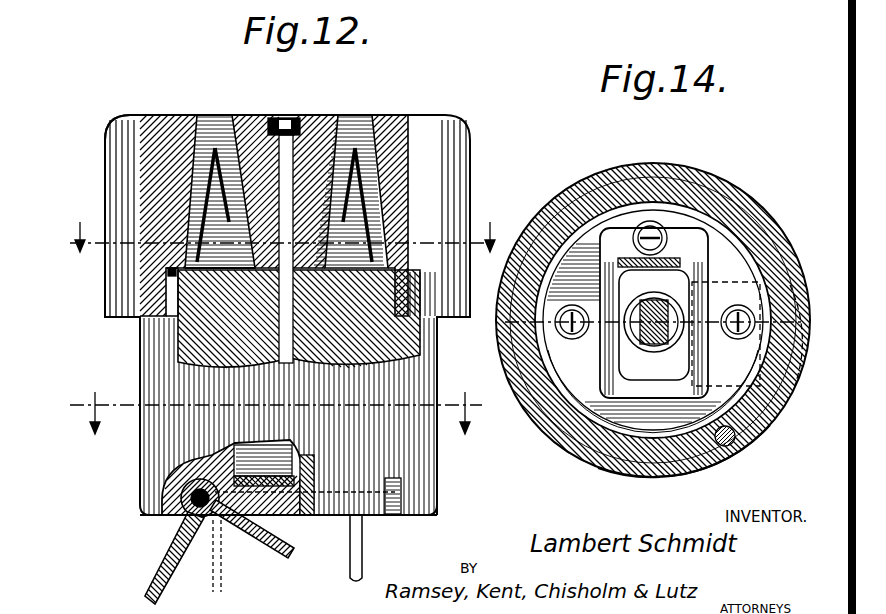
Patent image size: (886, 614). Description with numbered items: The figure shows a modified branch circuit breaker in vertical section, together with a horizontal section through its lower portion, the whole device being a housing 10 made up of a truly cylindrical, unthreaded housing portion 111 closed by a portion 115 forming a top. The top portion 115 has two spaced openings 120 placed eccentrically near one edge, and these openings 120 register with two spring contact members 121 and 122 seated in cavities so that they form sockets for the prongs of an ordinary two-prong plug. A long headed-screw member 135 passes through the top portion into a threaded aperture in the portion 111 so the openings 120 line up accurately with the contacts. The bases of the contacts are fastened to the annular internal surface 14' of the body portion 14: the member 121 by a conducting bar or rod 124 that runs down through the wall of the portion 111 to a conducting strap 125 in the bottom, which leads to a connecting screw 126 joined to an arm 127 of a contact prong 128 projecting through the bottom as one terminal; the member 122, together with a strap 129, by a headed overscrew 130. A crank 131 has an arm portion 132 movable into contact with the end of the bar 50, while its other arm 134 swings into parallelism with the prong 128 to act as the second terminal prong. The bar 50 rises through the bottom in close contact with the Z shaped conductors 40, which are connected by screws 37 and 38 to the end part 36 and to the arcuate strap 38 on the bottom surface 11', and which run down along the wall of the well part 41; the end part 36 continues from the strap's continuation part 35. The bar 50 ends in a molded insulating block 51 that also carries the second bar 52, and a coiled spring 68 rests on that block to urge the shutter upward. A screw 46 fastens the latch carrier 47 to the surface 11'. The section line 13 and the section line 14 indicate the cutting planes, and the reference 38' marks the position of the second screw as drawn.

In FIG. 12, the housing 10 is at (106, 162).
In FIG. 12, the portion forming a top for the housing 115 is at (468, 205).
In FIG. 12, the spaced openings 120 is at (222, 115).
In FIG. 12, the spring contact member 122 is at (213, 205).
In FIG. 12, the long headed-screw member 135 is at (220, 246).
In FIG. 12, the spring contact member 121 is at (356, 205).
In FIG. 12, the top surface of the flange 14' is at (282, 215).
In FIG. 12, the section line 13- 13 is at (285, 250).
In FIG. 12, the body portion 14 is at (276, 423).
In FIG. 12, the strap 129 is at (170, 318).
In FIG. 12, the headed overscrew 130 is at (176, 334).
In FIG. 12, the conducting bar or rod 124 is at (395, 350).
In FIG. 14, the conducting bar or rod 124 is at (732, 452).
In FIG. 12, the housing portion 111 is at (437, 418).
In FIG. 14, the housing portion 111 is at (647, 196).
In FIG. 12, the Z shaped conductors 40 is at (292, 445).
In FIG. 12, the crank 131 is at (212, 532).
In FIG. 12, the arm of the crank 134 is at (178, 556).
In FIG. 12, the arm portion of the crank 132 is at (275, 560).
In FIG. 12, the bar 50 is at (302, 522).
In FIG. 12, the contact prong 128 is at (353, 562).
In FIG. 12, the connecting screw 126 is at (392, 516).
In FIG. 14, the connecting screw 126 is at (790, 290).
In FIG. 12, the arm of the contact prong 127 is at (437, 470).
In FIG. 14, the arm of the contact prong 127 is at (770, 388).
In FIG. 12, the conducting strap 125 is at (437, 513).
In FIG. 14, the conducting strap 125 is at (758, 422).
In FIG. 14, the continuation part 35 is at (628, 190).
In FIG. 14, the end part 36 is at (574, 278).
In FIG. 14, the screw 46 is at (658, 222).
In FIG. 14, the latch carrier 47 is at (700, 230).
In FIG. 14, the surface of the bottom of the housing part 11' is at (697, 281).
In FIG. 14, the second bar 52 is at (652, 352).
In FIG. 14, the molded block 51 is at (675, 345).
In FIG. 14, the coiled spring 68 is at (616, 362).
In FIG. 14, the screw 37 is at (536, 350).
In FIG. 14, the center line 38' is at (655, 276).
In FIG. 14, the well part 41 is at (745, 252).
In FIG. 14, the arcuate shaped strap 38 is at (651, 479).